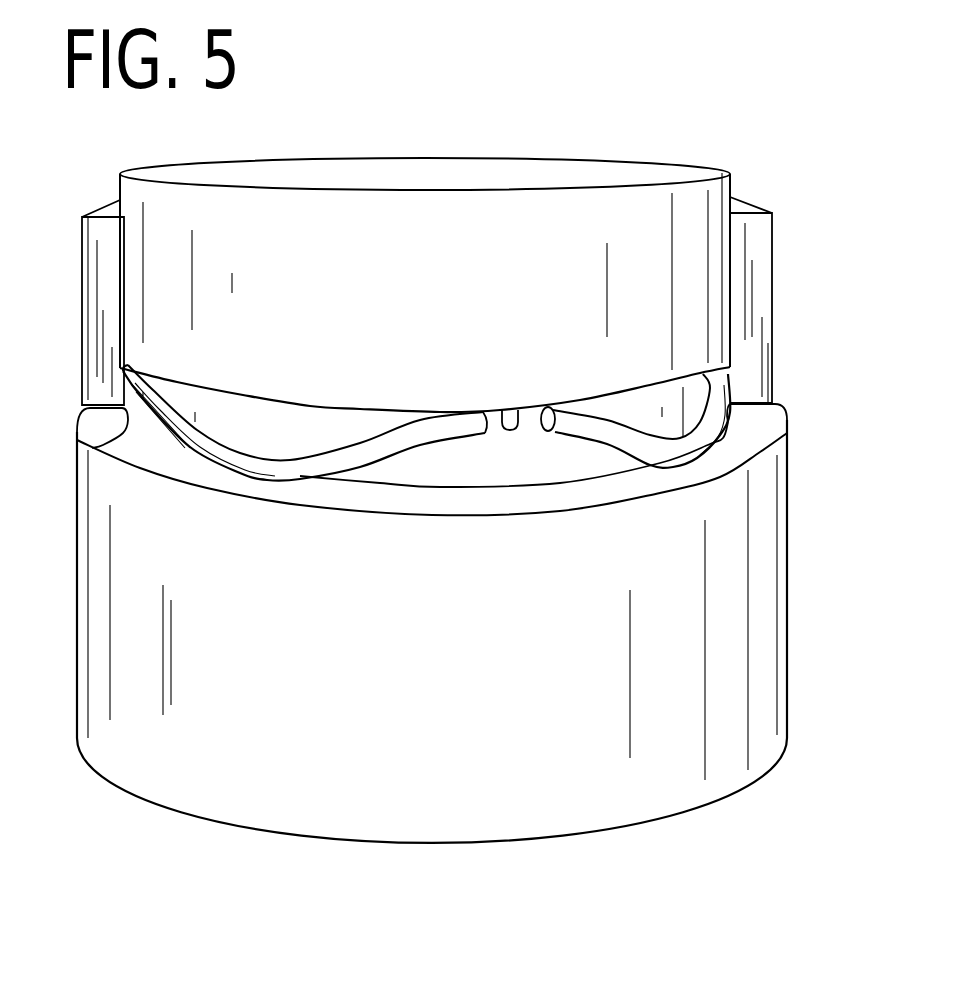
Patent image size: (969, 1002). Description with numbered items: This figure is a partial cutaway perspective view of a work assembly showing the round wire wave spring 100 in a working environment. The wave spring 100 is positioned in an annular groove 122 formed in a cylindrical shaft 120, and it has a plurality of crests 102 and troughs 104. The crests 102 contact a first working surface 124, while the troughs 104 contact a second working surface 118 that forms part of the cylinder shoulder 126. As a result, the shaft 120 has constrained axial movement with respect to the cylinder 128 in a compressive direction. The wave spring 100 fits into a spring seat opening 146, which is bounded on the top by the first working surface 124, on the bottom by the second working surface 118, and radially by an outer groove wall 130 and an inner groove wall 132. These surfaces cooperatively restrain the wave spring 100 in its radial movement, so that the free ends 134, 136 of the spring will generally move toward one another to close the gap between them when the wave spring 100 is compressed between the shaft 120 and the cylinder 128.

The round wire wave spring 100 is at (725, 438).
The crests 102 is at (136, 372).
The troughs 104 is at (268, 483).
The working surface 118 is at (608, 491).
The cylindrical shaft 120 is at (710, 172).
The annular groove 122 is at (690, 397).
The first working surface 124 is at (518, 410).
The cylinder shoulder 126 is at (703, 470).
The cylinder 128 is at (757, 686).
The outer groove wall 130 is at (123, 394).
The inner groove wall 132 is at (157, 392).
The free end 134 is at (542, 431).
The free end 136 is at (486, 411).
The spring seat opening 146 is at (92, 448).